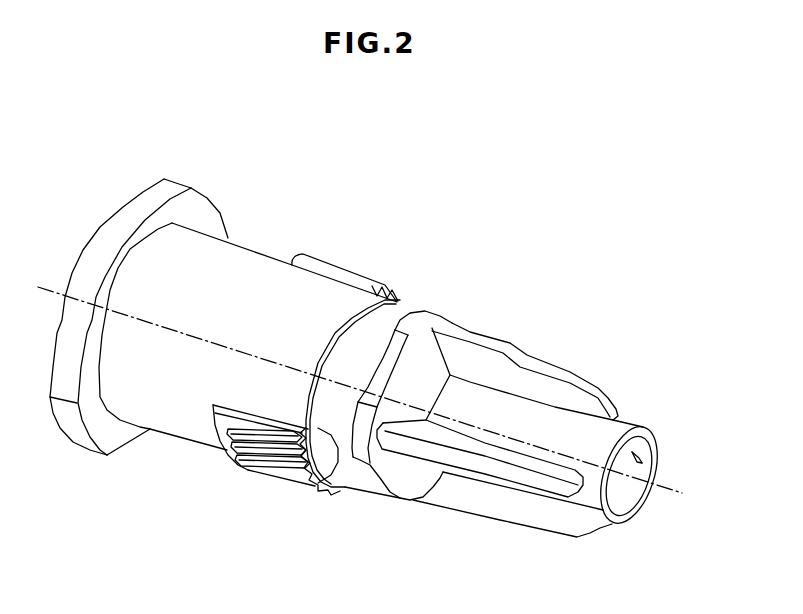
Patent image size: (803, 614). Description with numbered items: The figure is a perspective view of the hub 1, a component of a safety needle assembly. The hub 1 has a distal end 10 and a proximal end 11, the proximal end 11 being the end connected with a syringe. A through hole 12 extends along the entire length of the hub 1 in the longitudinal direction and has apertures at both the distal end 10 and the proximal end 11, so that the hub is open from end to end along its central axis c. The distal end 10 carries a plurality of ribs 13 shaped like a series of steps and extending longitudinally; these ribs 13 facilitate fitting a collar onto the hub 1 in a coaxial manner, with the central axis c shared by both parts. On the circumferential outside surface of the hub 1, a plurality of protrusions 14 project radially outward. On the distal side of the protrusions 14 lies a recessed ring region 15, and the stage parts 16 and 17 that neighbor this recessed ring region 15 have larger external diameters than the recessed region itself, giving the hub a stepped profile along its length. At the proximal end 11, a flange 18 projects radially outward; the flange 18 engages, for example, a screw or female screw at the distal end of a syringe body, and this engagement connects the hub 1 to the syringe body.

The hub 1 is at (398, 350).
The distal end 10 is at (540, 483).
The proximal end 11 is at (195, 370).
The through hole 12 is at (685, 476).
The ribs 13 is at (497, 454).
The protrusions 14 is at (264, 494).
The recessed ring region 15 is at (385, 275).
The stage part 16 is at (354, 429).
The stage part 17 is at (436, 383).
The flange 18 is at (125, 292).
The central axis c is at (401, 402).